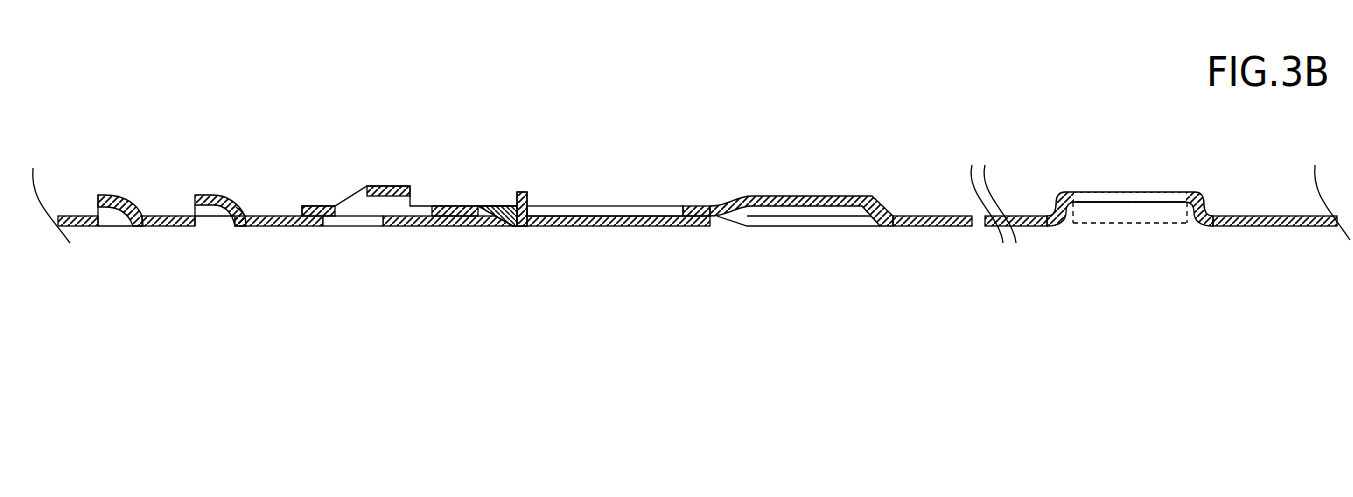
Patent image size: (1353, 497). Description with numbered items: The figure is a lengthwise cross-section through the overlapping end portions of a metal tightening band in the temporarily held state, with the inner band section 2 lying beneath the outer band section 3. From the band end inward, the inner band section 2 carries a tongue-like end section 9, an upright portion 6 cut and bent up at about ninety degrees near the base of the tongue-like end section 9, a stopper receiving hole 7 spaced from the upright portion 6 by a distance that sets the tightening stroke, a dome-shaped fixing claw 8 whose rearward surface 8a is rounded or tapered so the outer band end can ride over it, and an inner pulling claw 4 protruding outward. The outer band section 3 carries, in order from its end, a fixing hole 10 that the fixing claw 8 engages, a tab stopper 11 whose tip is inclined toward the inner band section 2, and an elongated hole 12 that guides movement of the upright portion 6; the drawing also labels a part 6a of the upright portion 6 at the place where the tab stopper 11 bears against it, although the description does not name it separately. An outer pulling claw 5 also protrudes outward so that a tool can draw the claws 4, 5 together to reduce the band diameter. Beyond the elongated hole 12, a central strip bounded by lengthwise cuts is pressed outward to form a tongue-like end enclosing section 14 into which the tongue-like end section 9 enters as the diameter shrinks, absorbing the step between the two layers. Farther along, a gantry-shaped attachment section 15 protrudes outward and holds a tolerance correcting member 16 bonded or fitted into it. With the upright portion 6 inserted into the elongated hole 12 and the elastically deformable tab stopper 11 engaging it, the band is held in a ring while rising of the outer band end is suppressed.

The inner band section 2 is at (450, 227).
The outer band section 3 is at (450, 206).
The inner pulling claw 4 is at (112, 195).
The outer pulling claw 5 is at (387, 186).
The upright portion 6 is at (527, 192).
The stopper surface 6a is at (507, 206).
The stopper receiving hole 7 is at (358, 222).
The fixing claw 8 is at (212, 195).
The surface 8a is at (237, 205).
The tongue-like end section 9 is at (658, 227).
The fixing hole 10 is at (345, 200).
The tab stopper 11 is at (497, 215).
The elongated hole 12 is at (643, 208).
The tongue-like end enclosing section 14 is at (828, 207).
The attachment section 15 is at (1088, 202).
The tolerance correcting member 16 is at (1145, 208).